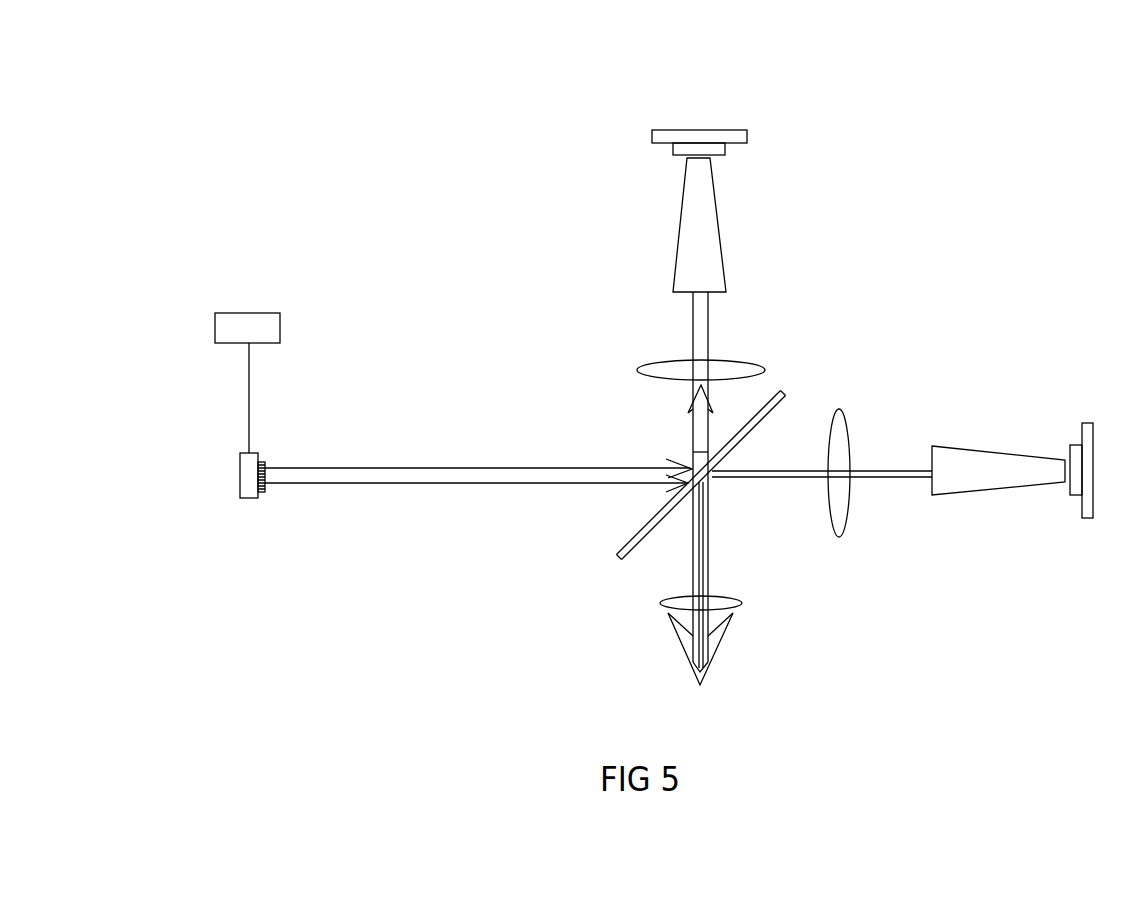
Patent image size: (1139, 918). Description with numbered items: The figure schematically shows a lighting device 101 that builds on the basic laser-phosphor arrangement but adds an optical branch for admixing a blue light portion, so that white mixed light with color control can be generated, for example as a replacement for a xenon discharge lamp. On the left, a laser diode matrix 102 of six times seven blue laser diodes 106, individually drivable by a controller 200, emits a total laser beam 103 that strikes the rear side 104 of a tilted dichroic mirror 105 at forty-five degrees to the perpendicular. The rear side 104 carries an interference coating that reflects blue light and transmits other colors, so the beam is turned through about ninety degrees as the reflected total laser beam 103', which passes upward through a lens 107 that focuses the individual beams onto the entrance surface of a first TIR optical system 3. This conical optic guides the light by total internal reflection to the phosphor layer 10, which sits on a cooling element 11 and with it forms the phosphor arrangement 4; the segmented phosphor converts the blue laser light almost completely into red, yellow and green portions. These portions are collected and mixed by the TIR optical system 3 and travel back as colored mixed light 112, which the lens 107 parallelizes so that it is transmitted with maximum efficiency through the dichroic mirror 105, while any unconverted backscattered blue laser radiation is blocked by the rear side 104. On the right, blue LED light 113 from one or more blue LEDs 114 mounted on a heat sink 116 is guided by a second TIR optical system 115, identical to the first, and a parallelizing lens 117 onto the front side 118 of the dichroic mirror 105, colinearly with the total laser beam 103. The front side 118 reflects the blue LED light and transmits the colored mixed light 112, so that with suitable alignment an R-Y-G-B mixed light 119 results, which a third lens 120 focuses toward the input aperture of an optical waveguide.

The lighting device 101 is at (900, 116).
The phosphor arrangement 4 is at (612, 140).
The cooling element 11 is at (679, 137).
The phosphor layer 10 is at (725, 152).
The first TIR optical system 3 is at (718, 235).
The colored mixed light 112 is at (693, 323).
The lens 107 is at (637, 370).
The reflected total laser beam 103' is at (644, 418).
The controller 200 is at (215, 330).
The laser diode matrix 102 is at (247, 509).
The blue laser diodes 106 is at (264, 454).
The total laser beam 103 is at (478, 520).
The rear side 104 is at (638, 475).
The dichroic mirror 105 is at (616, 564).
The front side 118 is at (657, 627).
The R-Y-G-B mixed light 119 is at (705, 567).
The third lens 120 is at (742, 604).
The blue LED light 113 is at (893, 478).
The parallelizing lens 117 is at (839, 410).
The second TIR optical system 115 is at (1005, 482).
The blue LEDs 114 is at (1076, 437).
The heat sink 116 is at (1088, 518).